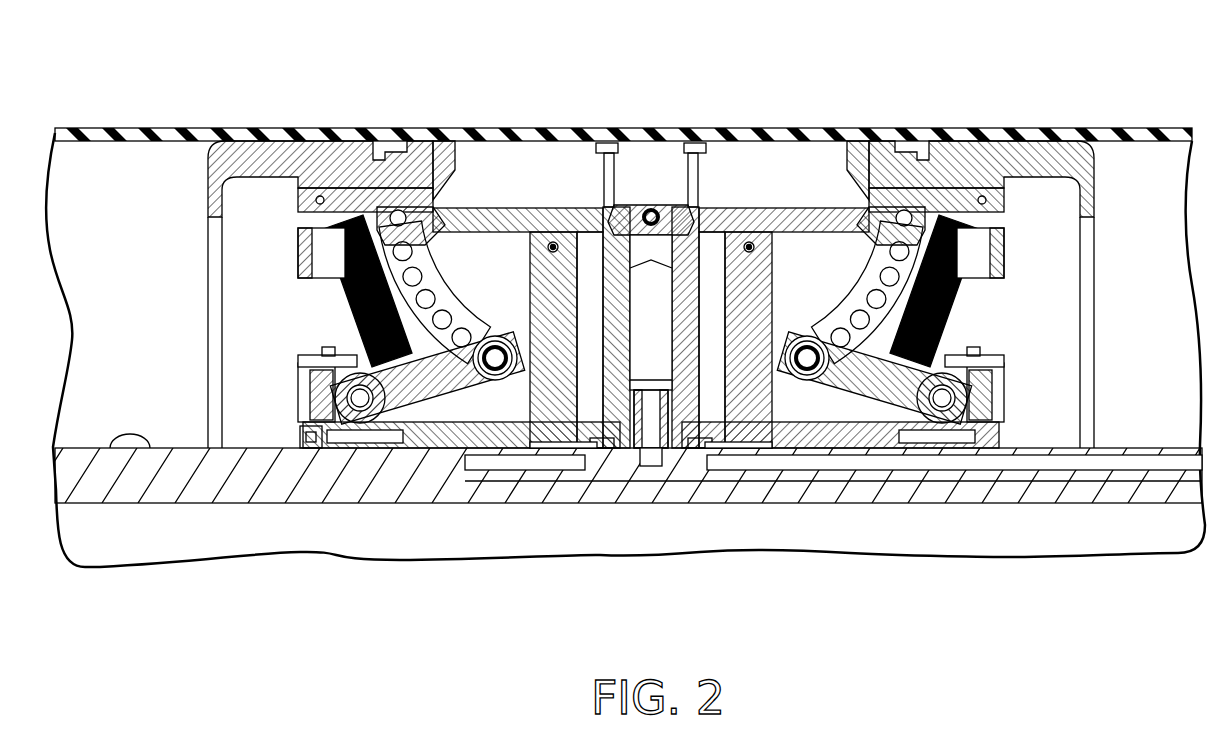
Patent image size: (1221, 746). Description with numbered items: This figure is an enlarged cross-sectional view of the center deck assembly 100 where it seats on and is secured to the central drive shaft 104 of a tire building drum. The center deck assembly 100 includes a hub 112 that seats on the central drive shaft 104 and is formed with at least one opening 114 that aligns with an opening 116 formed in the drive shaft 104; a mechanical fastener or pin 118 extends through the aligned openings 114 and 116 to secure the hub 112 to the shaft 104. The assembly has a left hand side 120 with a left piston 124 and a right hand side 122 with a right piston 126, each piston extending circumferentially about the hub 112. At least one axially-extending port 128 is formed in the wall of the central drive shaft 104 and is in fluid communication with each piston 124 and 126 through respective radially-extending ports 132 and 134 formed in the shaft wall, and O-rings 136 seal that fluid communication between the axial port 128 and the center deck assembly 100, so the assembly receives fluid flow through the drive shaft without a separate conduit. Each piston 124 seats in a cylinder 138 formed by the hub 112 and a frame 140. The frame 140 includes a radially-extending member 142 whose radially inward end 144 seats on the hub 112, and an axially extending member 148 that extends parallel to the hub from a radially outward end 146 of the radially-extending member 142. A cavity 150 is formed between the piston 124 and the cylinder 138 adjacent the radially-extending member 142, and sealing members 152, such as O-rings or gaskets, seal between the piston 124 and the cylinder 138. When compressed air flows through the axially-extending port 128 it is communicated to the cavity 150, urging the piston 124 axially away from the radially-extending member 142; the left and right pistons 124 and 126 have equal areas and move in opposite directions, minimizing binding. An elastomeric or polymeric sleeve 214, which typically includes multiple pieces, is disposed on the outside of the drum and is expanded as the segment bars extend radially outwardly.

The center deck assembly 100 is at (936, 100).
The central drive shaft 104 is at (112, 448).
The hub 112 is at (305, 440).
The opening 114 is at (650, 458).
The opening 116 is at (650, 462).
The mechanical fastener or pin 118 is at (615, 447).
The left hand side 120 is at (300, 188).
The right hand side 122 is at (1003, 190).
The left piston 124 is at (525, 330).
The right piston 126 is at (780, 325).
The axially-extending port 128 is at (1005, 478).
The radially-extending port 132 is at (565, 462).
The radially-extending port 134 is at (700, 450).
The O-rings 136 is at (518, 456).
The cylinder 138 is at (455, 206).
The frame 140 is at (545, 210).
The radially-extending member 142 is at (555, 335).
The radially inward end 144 is at (520, 430).
The radially outward end 146 is at (596, 237).
The axially extending member 148 is at (458, 190).
The cavity 150 is at (563, 297).
The sealing members 152 is at (553, 240).
The sleeve 214 is at (340, 138).